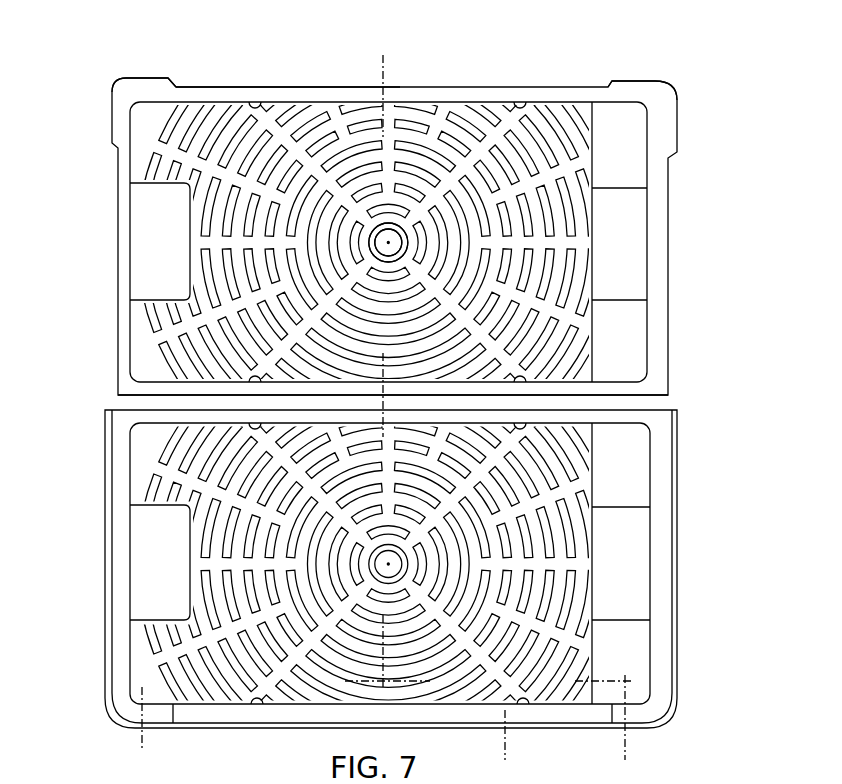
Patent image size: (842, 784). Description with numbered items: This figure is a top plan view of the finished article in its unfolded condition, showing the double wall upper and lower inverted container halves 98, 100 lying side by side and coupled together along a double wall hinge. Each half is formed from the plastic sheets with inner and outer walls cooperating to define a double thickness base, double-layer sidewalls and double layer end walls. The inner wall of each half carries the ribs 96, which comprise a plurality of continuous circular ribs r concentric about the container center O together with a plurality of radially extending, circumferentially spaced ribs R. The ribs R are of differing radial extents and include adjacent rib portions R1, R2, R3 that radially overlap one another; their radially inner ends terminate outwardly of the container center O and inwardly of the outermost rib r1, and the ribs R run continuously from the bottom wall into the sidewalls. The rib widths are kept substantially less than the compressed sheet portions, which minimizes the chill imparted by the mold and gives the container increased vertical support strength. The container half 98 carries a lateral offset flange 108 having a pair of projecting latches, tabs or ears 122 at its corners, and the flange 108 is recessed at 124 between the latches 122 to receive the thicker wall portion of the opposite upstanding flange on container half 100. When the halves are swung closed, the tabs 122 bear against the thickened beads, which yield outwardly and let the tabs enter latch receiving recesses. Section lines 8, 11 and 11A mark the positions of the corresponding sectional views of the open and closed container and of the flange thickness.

The upper container half 98 is at (668, 205).
The lower container half 100 is at (697, 524).
The ribs 96 is at (593, 485).
The projecting latches 122 is at (150, 83).
The lateral offset flange 108 is at (197, 87).
The recess 124 is at (611, 82).
The radially extending ribs R is at (285, 118).
The circular ribs r is at (303, 117).
The outermost rib r1 is at (170, 467).
The container center O is at (388, 243).
The rib portion R1 is at (568, 138).
The rib portion R2 is at (570, 242).
The rib portion R3 is at (560, 337).
The section line 8- 8 is at (383, 63).
The section line 11- 11 is at (172, 743).
The section line 11A- 11A is at (505, 716).